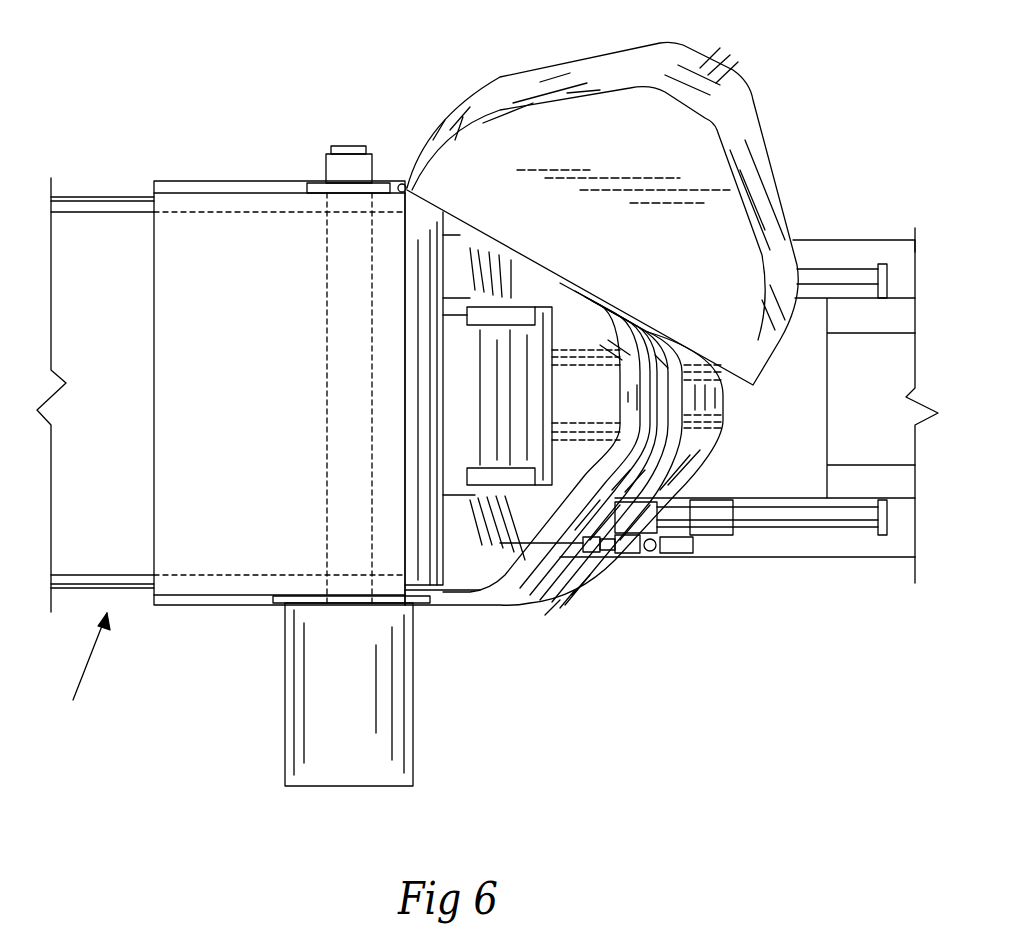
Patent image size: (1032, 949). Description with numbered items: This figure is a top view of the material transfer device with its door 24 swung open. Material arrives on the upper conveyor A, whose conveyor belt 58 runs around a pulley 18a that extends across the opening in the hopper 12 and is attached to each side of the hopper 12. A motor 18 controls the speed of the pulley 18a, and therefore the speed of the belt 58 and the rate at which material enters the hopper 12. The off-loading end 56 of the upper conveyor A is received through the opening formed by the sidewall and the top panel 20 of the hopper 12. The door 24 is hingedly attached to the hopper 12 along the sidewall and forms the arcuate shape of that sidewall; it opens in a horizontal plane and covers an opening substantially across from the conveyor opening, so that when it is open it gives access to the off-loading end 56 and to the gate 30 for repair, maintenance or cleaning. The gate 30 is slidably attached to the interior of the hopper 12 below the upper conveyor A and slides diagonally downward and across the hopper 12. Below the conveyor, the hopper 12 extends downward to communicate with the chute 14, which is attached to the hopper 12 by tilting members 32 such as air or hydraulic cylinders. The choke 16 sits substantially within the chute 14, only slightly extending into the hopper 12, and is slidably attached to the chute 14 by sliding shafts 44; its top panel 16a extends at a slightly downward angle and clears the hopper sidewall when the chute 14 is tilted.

The hopper 12 is at (668, 360).
The chute 14 is at (720, 435).
The choke 16 is at (749, 405).
The top panel 16a is at (821, 337).
The motor 18 is at (288, 711).
The pulley 18a is at (350, 146).
The top panel 20 is at (279, 393).
The door 24 is at (712, 88).
The gate 30 is at (498, 343).
The tilting members 32 is at (640, 540).
The sliding shafts 44 is at (772, 533).
The off-loading end 56 is at (428, 265).
The conveyor belt 58 is at (93, 245).
The upper conveyor A is at (87, 676).